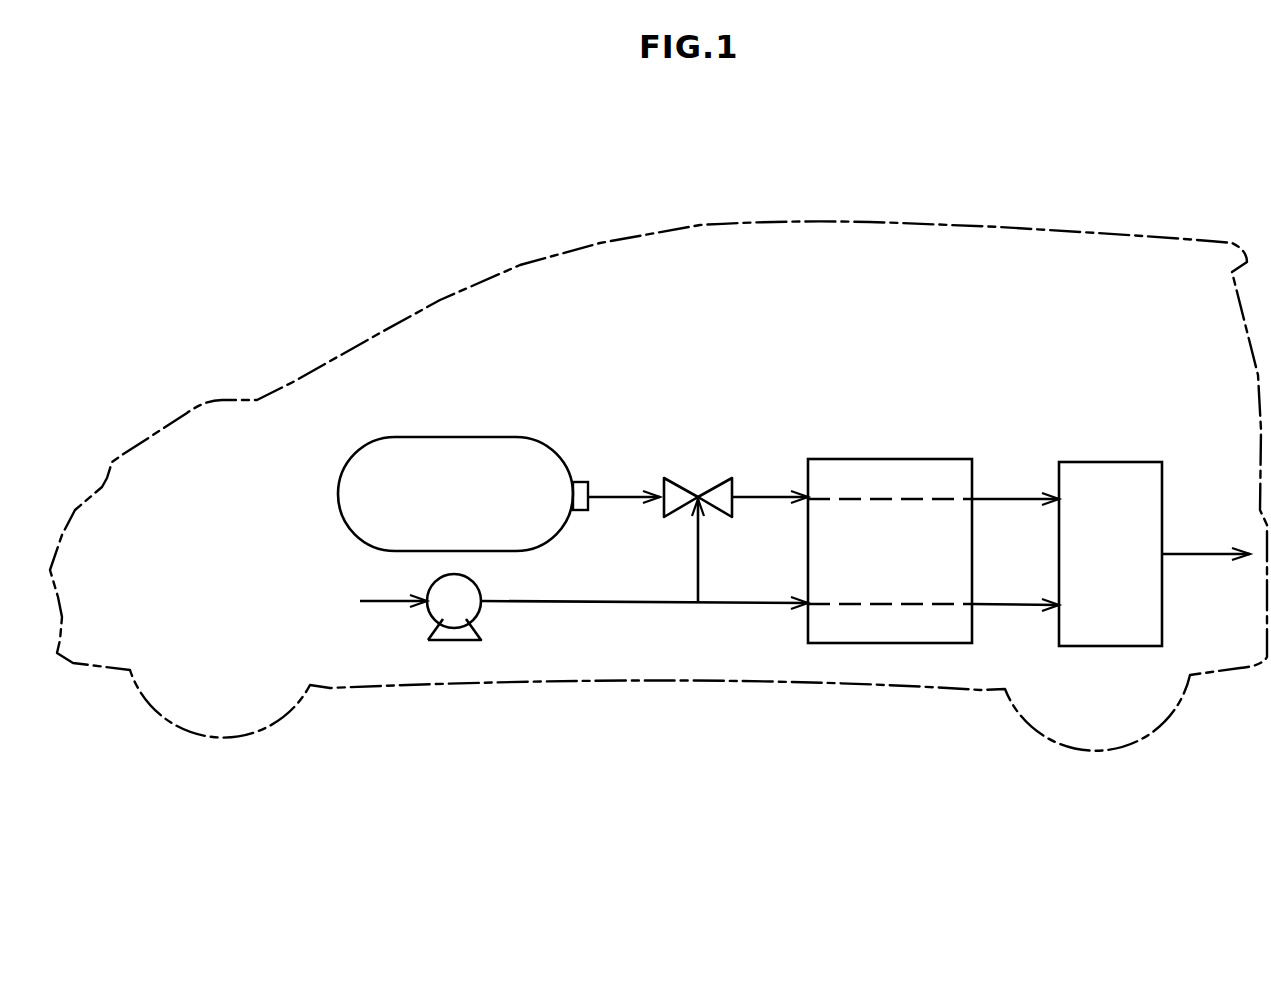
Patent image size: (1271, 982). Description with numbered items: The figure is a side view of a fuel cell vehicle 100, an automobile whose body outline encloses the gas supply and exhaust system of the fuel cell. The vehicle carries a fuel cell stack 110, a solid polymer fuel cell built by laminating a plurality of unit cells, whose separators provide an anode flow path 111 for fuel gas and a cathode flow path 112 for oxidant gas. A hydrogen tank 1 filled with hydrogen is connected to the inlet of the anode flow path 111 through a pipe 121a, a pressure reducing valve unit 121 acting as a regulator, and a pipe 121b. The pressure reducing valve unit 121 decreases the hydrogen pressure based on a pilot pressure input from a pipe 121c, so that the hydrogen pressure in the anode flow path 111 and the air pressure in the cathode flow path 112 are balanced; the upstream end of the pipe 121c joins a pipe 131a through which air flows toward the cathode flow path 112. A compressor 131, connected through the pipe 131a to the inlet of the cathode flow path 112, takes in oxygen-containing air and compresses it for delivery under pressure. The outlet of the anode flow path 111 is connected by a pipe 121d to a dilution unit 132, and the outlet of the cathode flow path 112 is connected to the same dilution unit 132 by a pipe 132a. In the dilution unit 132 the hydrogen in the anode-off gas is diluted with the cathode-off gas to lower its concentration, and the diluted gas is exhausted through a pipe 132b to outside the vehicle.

The fuel cell vehicle 100 is at (1073, 205).
The hydrogen tank 1 is at (412, 437).
The pipe 121a is at (618, 493).
The pressure reducing valve unit 121 is at (692, 478).
The pipe 121b is at (750, 495).
The pipe 121c is at (698, 563).
The compressor 131 is at (472, 576).
The pipe 131a is at (765, 606).
The fuel cell stack 110 is at (848, 458).
The anode flow path 111 is at (840, 499).
The cathode flow path 112 is at (840, 604).
The pipe 121d is at (1030, 497).
The pipe 132a is at (1030, 608).
The dilution unit 132 is at (1097, 461).
The pipe 132b is at (1180, 553).